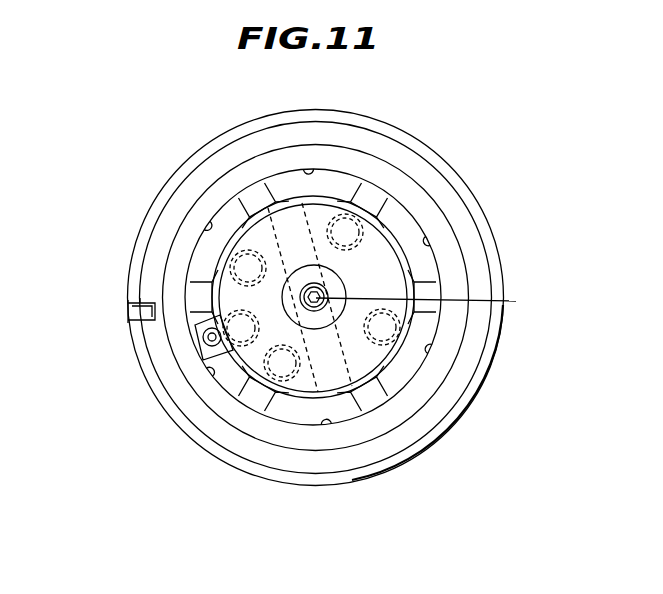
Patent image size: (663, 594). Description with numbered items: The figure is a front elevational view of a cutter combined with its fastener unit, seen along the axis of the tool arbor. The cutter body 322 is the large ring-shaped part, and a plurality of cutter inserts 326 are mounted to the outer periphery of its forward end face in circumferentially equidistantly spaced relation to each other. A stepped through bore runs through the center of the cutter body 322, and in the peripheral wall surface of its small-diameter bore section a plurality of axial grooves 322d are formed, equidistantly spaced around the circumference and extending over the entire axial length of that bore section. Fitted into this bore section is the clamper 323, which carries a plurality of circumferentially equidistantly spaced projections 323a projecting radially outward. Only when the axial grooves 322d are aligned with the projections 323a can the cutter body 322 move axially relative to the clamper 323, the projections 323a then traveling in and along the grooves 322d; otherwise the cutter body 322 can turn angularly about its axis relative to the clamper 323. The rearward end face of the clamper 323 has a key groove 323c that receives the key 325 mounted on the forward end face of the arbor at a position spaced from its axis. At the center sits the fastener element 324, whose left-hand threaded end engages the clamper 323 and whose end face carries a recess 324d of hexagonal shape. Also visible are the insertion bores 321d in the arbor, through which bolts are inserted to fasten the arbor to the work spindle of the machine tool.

The insertion bores 321d is at (290, 396).
The cutter body 322 is at (424, 136).
The axial grooves 322d is at (327, 425).
The clamper 323 is at (396, 233).
The projections 323a is at (392, 396).
The key groove 323c is at (228, 388).
The fastener element 324 is at (321, 294).
The recess of hexagonal shape 324d is at (445, 301).
The key 325 is at (203, 328).
The cutter inserts 326 is at (130, 313).